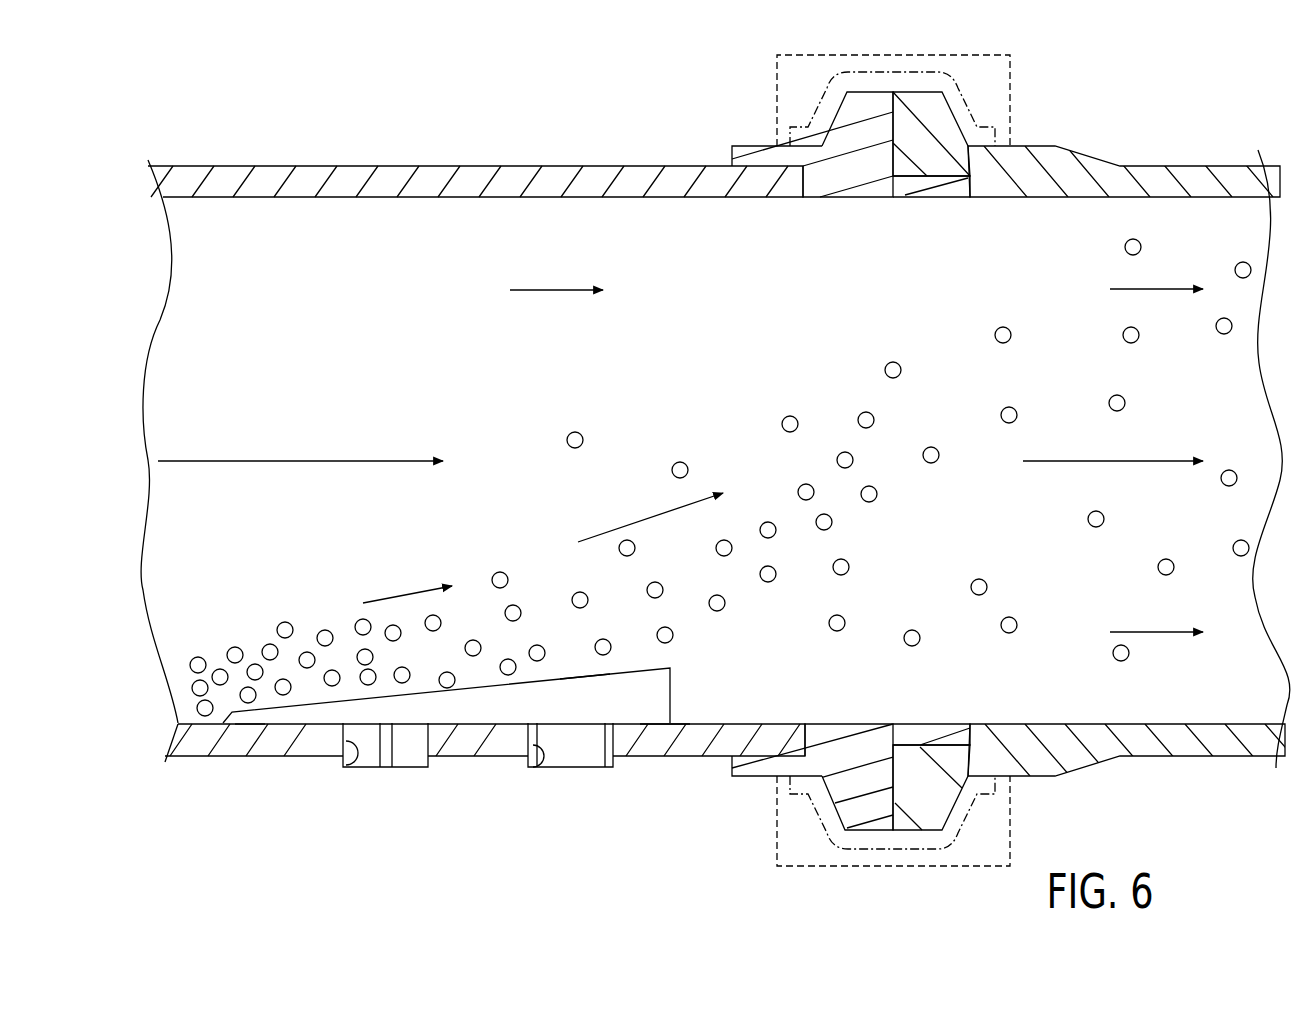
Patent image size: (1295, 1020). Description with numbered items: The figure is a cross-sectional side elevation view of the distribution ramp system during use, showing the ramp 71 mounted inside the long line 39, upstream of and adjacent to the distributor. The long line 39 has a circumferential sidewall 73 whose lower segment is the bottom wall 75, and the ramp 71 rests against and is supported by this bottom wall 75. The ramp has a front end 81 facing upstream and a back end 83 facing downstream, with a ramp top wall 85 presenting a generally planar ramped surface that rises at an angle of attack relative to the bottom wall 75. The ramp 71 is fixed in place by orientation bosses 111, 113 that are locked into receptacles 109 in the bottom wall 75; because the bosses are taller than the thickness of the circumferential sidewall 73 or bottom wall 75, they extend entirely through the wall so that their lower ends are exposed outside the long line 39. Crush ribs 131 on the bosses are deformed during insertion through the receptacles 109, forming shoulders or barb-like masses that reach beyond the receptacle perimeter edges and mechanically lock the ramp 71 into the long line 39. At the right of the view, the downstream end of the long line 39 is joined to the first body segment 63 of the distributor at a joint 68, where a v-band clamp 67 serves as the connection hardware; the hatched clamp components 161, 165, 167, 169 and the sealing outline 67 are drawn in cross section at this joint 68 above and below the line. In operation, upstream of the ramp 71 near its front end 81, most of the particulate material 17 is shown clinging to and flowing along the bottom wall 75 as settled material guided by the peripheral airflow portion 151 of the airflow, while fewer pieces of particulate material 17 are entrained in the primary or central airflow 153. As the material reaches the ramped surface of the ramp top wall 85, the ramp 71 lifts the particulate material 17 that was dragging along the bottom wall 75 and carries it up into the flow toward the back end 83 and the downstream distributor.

The particulate material 17 is at (993, 333).
The long line 39 is at (400, 160).
The first body segment 63 is at (763, 137).
The v-band clamp 67 is at (978, 62).
The joint 68 is at (823, 43).
The ramp 71 is at (675, 693).
The circumferential sidewall 73 is at (176, 737).
The bottom wall 75 is at (202, 747).
The front end 81 is at (249, 733).
The back end 83 is at (658, 720).
The ramp top wall 85 is at (583, 675).
The receptacles 109 is at (350, 766).
The orientation boss 111 is at (410, 781).
The orientation boss 113 is at (585, 781).
The crush ribs 131 is at (385, 752).
The peripheral airflow portion 151 is at (415, 598).
The primary air flow 153 is at (297, 460).
The fastener 161 is at (950, 128).
The bracket 165 is at (850, 113).
The base 167 is at (922, 187).
The flange 169 is at (730, 147).